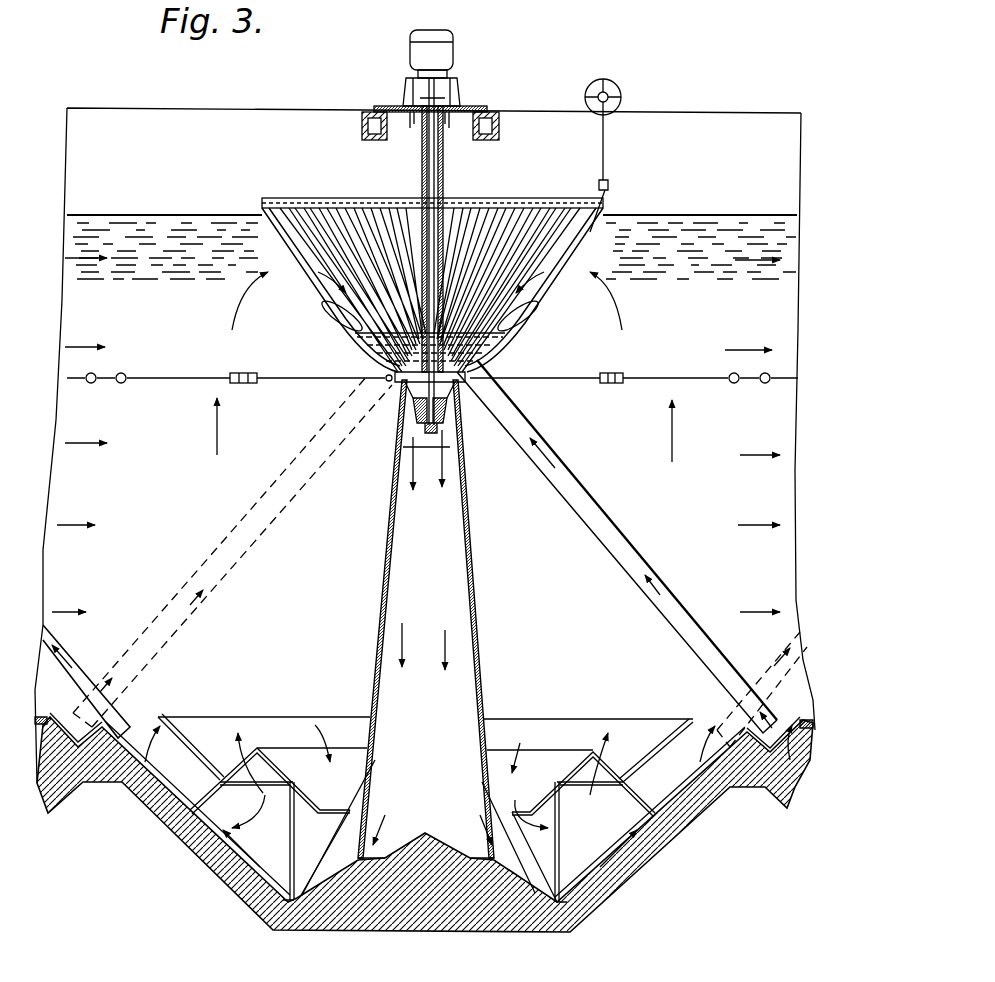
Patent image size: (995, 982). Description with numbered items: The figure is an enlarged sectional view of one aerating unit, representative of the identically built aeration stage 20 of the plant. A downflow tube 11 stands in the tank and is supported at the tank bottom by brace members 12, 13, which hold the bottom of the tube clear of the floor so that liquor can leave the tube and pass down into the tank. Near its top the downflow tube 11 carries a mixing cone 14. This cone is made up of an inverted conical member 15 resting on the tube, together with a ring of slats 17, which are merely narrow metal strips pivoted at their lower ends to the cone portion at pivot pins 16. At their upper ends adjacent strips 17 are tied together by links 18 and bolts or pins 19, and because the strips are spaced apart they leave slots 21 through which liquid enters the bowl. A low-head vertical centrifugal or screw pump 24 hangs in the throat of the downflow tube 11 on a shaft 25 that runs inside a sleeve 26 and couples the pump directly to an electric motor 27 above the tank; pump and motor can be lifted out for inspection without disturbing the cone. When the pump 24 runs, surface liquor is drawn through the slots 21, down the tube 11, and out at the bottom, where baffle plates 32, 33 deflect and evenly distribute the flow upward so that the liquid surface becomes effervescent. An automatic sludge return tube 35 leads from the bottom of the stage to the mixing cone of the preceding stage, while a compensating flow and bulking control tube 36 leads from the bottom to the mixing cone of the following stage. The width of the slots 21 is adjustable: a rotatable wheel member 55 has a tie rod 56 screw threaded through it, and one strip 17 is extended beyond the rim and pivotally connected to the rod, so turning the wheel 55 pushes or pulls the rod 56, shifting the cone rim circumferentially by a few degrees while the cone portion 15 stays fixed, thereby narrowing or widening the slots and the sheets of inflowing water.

The downflow tube 11 is at (473, 580).
The brace member 12 is at (350, 810).
The brace member 13 is at (494, 806).
The mixing cone 14 is at (568, 268).
The inverted conical member 15 is at (500, 342).
The pivot pins 16 is at (533, 312).
The slats 17 is at (262, 204).
The links 18 is at (315, 200).
The bolts or pins 19 is at (350, 200).
The aeration stage 20 is at (238, 110).
The slots 21 is at (299, 200).
The centrifugal or screw pump 24 is at (415, 422).
The shaft 25 is at (422, 151).
The sleeve 26 is at (440, 172).
The electric motor 27 is at (410, 56).
The baffle plate 32 is at (546, 750).
The baffle plate 33 is at (592, 718).
The automatic sludge return tube 35 is at (560, 462).
The compensating flow and bulking control tube 36 is at (275, 490).
The rotatable wheel member 55 is at (585, 96).
The tie rod 56 is at (602, 131).